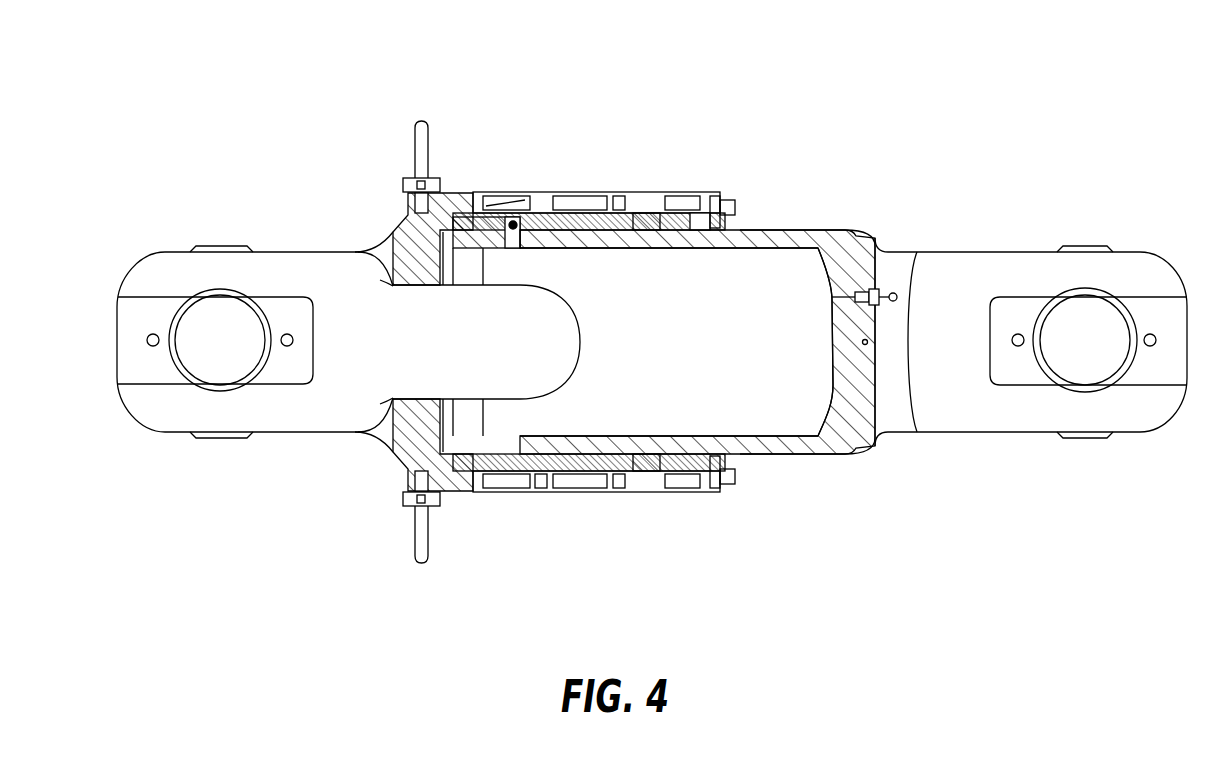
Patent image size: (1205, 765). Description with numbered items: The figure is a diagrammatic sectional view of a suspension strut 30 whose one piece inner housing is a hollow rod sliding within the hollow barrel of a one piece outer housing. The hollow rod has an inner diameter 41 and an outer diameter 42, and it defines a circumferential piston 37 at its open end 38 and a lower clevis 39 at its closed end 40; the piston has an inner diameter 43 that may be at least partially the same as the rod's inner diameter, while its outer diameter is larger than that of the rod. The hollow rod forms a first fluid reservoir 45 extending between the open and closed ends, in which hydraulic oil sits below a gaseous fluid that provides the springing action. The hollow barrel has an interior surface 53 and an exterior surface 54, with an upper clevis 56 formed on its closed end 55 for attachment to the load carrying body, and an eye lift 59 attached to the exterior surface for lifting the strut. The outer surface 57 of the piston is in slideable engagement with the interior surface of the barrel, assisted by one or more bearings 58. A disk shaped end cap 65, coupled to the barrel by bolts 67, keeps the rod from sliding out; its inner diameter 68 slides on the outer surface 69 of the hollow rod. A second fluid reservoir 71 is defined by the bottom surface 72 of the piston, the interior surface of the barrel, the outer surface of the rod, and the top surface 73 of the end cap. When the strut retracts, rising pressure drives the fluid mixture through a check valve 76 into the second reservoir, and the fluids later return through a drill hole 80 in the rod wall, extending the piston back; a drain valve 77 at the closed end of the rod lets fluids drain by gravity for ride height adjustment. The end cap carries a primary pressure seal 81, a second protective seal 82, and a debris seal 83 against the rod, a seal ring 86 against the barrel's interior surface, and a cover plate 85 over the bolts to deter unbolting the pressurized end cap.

The suspension strut 30 is at (458, 92).
The circumferential piston 37 is at (493, 220).
The open end 38 is at (405, 452).
The lower clevis 39 is at (898, 415).
The closed end 40 is at (840, 455).
The inner diameter 41 is at (770, 232).
The outer diameter 42 is at (797, 305).
The inner diameter 43 is at (514, 222).
The first fluid reservoir 45 is at (843, 298).
The interior surface 53 is at (613, 205).
The exterior surface 54 is at (640, 490).
The closed end 55 is at (390, 408).
The upper clevis 56 is at (371, 262).
The outer surface 57 is at (453, 480).
The bearings 58 is at (470, 210).
The eye lift 59 is at (413, 178).
The end cap 65 is at (710, 484).
The bolts 67 is at (693, 480).
The inner diameter 68 is at (632, 212).
The outer surface 69 is at (767, 457).
The second fluid reservoir 71 is at (570, 462).
The bottom surface 72 is at (527, 477).
The top surface 73 is at (610, 462).
The check valve 76 is at (520, 222).
The drain valve 77 is at (900, 252).
The drill hole 80 is at (533, 477).
The primary pressure seal 81 is at (681, 205).
The second protective seal 82 is at (702, 208).
The debris seal 83 is at (720, 205).
The cover plate 85 is at (740, 205).
The seal ring 86 is at (655, 470).